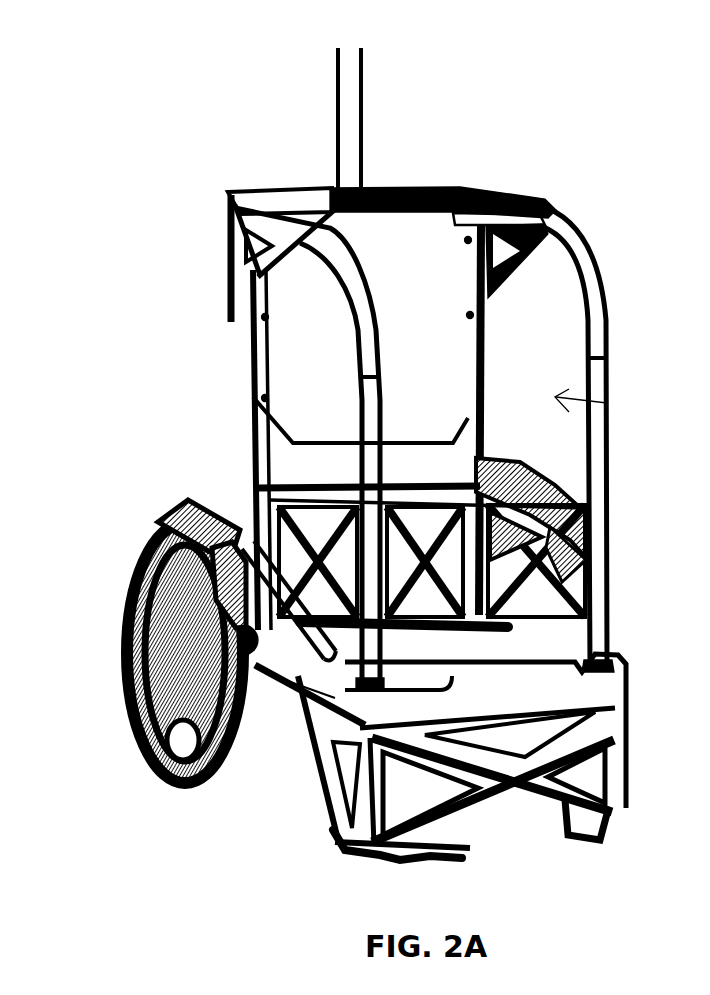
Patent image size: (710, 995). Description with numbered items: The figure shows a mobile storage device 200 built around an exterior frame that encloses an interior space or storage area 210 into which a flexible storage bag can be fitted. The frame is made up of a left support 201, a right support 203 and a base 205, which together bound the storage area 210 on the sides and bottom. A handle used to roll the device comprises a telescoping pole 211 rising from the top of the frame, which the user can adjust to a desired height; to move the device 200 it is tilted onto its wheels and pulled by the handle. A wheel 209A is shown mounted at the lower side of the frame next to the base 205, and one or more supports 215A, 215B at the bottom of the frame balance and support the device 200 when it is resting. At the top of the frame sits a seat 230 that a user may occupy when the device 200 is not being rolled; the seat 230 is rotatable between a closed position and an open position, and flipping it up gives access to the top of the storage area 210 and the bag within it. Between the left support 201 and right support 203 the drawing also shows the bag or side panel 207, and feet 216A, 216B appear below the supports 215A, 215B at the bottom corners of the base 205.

The mobile storage device 200 is at (178, 62).
The telescoping pole 211 is at (353, 100).
The seat 230 is at (503, 192).
The bag 207 is at (467, 350).
The left support 201 is at (358, 422).
The storage area 210 is at (615, 400).
The right support 203 is at (603, 462).
The base 205 is at (293, 663).
The wheel 209A is at (148, 725).
The support 215A is at (485, 825).
The support 215B is at (545, 808).
The left foot 216A is at (430, 858).
The right foot 216B is at (597, 845).